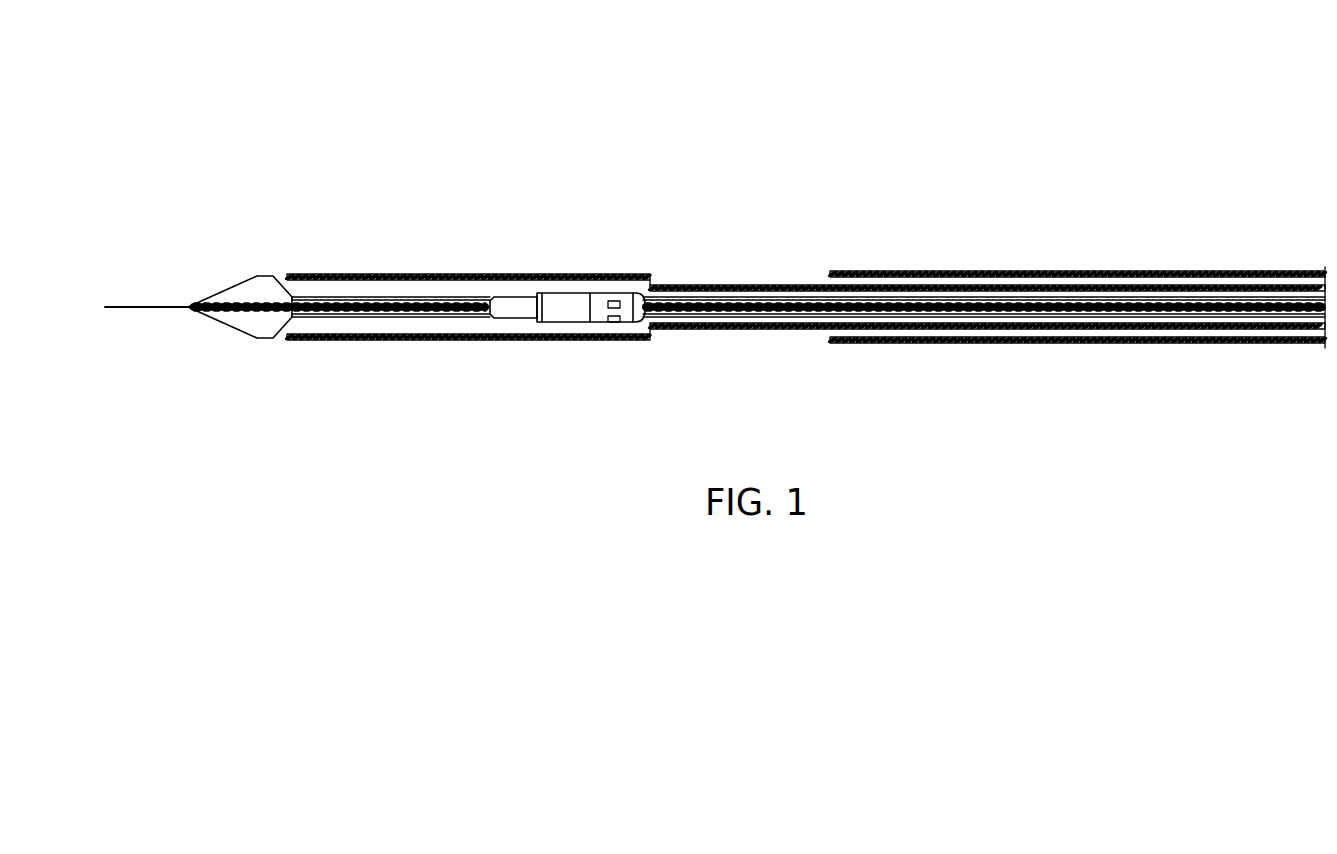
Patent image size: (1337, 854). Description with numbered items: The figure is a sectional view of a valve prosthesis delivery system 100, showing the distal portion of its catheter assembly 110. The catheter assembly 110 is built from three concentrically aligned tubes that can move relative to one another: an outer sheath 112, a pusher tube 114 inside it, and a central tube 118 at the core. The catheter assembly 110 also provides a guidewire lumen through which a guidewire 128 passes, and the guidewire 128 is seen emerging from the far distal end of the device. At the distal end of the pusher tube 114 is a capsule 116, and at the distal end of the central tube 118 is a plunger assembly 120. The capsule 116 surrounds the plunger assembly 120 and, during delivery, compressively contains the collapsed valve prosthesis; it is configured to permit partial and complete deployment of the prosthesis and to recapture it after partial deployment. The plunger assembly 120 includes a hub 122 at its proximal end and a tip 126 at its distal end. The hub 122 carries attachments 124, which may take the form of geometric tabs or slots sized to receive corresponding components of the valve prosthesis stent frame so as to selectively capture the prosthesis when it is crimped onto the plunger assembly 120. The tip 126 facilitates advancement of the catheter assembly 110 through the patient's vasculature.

The delivery system 100 is at (538, 74).
The catheter assembly 110 is at (819, 254).
The outer sheath 112 is at (1042, 346).
The pusher tube 114 is at (764, 331).
The capsule 116 is at (300, 274).
The central tube 118 is at (751, 298).
The plunger assembly 120 is at (551, 288).
The hub 122 is at (638, 293).
The attachments 124 is at (614, 293).
The tip 126 is at (222, 324).
The guidewire 128 is at (143, 303).